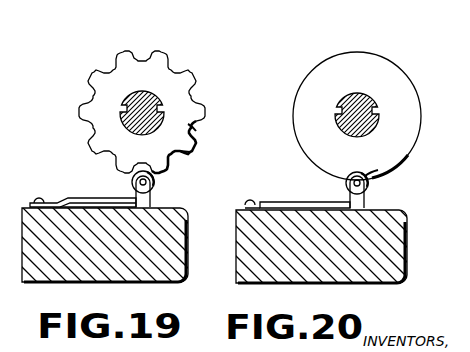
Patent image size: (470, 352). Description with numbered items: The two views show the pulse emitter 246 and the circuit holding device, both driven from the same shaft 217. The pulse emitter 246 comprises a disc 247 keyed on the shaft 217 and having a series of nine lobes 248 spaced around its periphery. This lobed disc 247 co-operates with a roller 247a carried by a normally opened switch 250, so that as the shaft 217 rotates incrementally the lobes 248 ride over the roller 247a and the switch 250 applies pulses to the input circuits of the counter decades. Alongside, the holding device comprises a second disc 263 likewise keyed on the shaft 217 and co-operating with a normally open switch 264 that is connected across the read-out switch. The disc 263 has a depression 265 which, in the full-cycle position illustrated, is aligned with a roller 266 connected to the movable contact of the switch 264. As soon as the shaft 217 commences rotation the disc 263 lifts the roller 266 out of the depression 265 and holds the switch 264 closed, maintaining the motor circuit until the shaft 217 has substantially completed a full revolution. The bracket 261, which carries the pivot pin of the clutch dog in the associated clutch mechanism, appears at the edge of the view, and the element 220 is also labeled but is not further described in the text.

In FIG. 19, the pulse emitter 246 is at (197, 44).
In FIG. 19, the shaft 217 is at (153, 82).
In FIG. 20, the shaft 217 is at (360, 93).
In FIG. 19, the disc 247 is at (188, 128).
In FIG. 19, the lobes 248 is at (190, 154).
In FIG. 19, the member 220 is at (0, 144).
In FIG. 19, the bracket 261 is at (0, 176).
In FIG. 19, the roller 247a is at (132, 181).
In FIG. 19, the normally opened switch 250 is at (160, 208).
In FIG. 20, the disc 263 is at (378, 67).
In FIG. 20, the depression 265 is at (392, 150).
In FIG. 20, the roller 266 is at (347, 183).
In FIG. 20, the normally open switch 264 is at (370, 218).